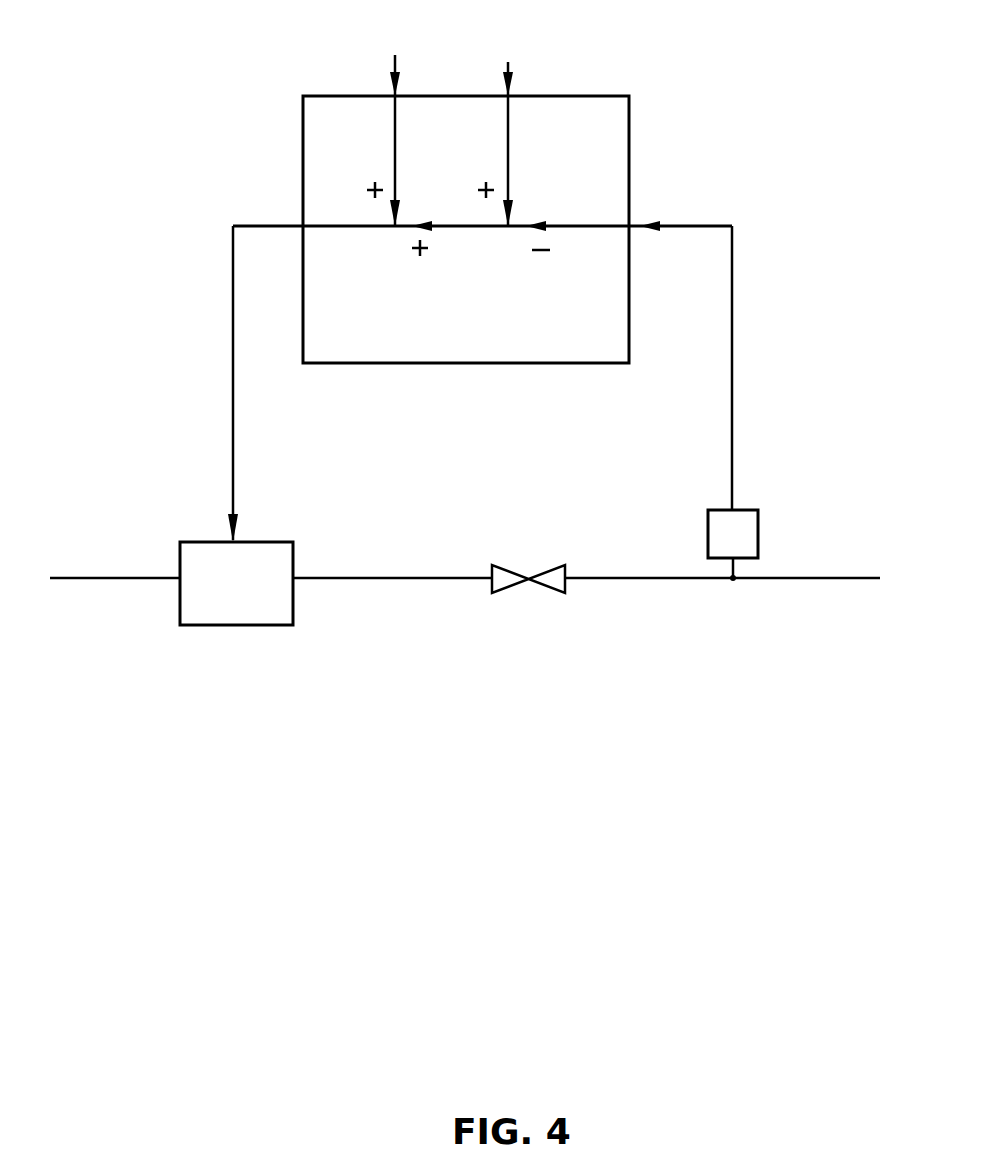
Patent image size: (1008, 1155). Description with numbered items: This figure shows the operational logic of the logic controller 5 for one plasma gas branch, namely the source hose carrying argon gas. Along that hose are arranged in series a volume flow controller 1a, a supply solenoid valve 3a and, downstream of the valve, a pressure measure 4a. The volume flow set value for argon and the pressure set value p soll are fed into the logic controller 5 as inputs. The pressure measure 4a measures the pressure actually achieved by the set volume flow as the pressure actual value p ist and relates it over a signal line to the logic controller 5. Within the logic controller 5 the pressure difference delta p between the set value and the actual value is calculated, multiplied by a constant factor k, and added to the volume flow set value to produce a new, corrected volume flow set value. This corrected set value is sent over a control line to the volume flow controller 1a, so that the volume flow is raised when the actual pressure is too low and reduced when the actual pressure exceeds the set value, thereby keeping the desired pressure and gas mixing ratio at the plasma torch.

The logic controller 5 is at (629, 97).
The volume flow controller 1a is at (272, 540).
The supply solenoid valve 3a is at (497, 565).
The pressure measure 4a is at (712, 510).